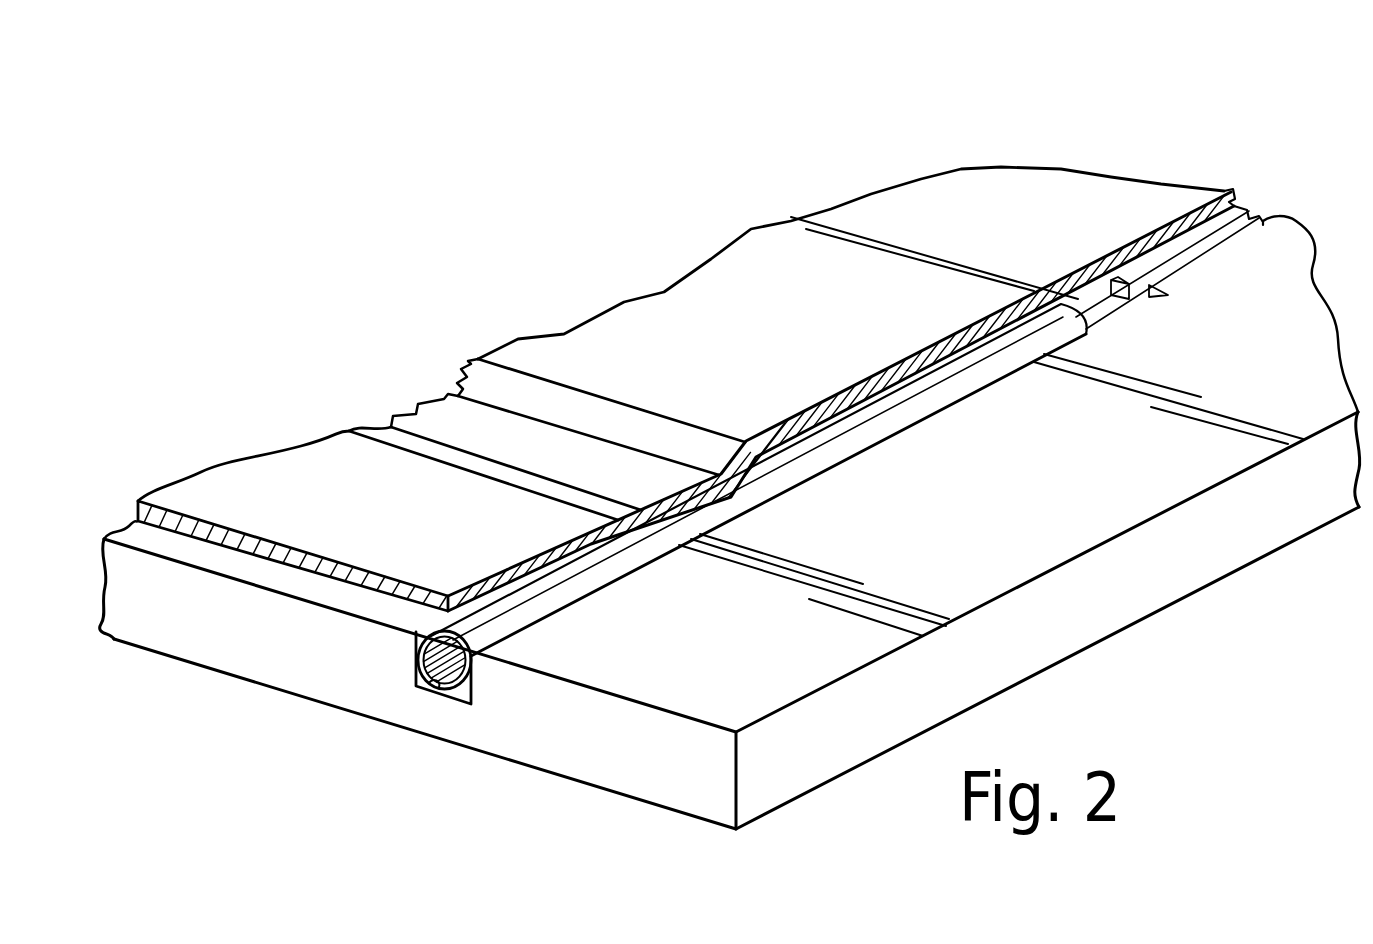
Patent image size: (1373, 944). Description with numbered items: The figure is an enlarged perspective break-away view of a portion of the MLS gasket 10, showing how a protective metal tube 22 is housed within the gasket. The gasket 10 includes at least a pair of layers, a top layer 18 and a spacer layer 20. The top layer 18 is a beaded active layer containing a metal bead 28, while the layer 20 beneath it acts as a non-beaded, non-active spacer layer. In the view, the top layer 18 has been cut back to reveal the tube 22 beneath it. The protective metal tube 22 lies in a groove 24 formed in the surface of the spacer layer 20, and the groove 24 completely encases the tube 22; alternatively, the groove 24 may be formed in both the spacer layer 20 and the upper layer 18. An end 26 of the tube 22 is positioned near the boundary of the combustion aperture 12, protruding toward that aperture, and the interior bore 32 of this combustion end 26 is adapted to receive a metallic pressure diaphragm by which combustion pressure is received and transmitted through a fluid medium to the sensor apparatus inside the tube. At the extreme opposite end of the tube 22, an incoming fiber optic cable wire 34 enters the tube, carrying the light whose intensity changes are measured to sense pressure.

The MLS gasket 10 is at (995, 138).
The combustion aperture 12 is at (630, 775).
The top layer 18 is at (140, 512).
The spacer layer 20 is at (100, 581).
The protective metal tube 22 is at (837, 447).
The groove 24 is at (417, 662).
The end of the tube 26 is at (473, 630).
The metal bead 28 is at (598, 468).
The interior bore 32 is at (423, 687).
The incoming fiber optic cable wire 34 is at (1128, 300).